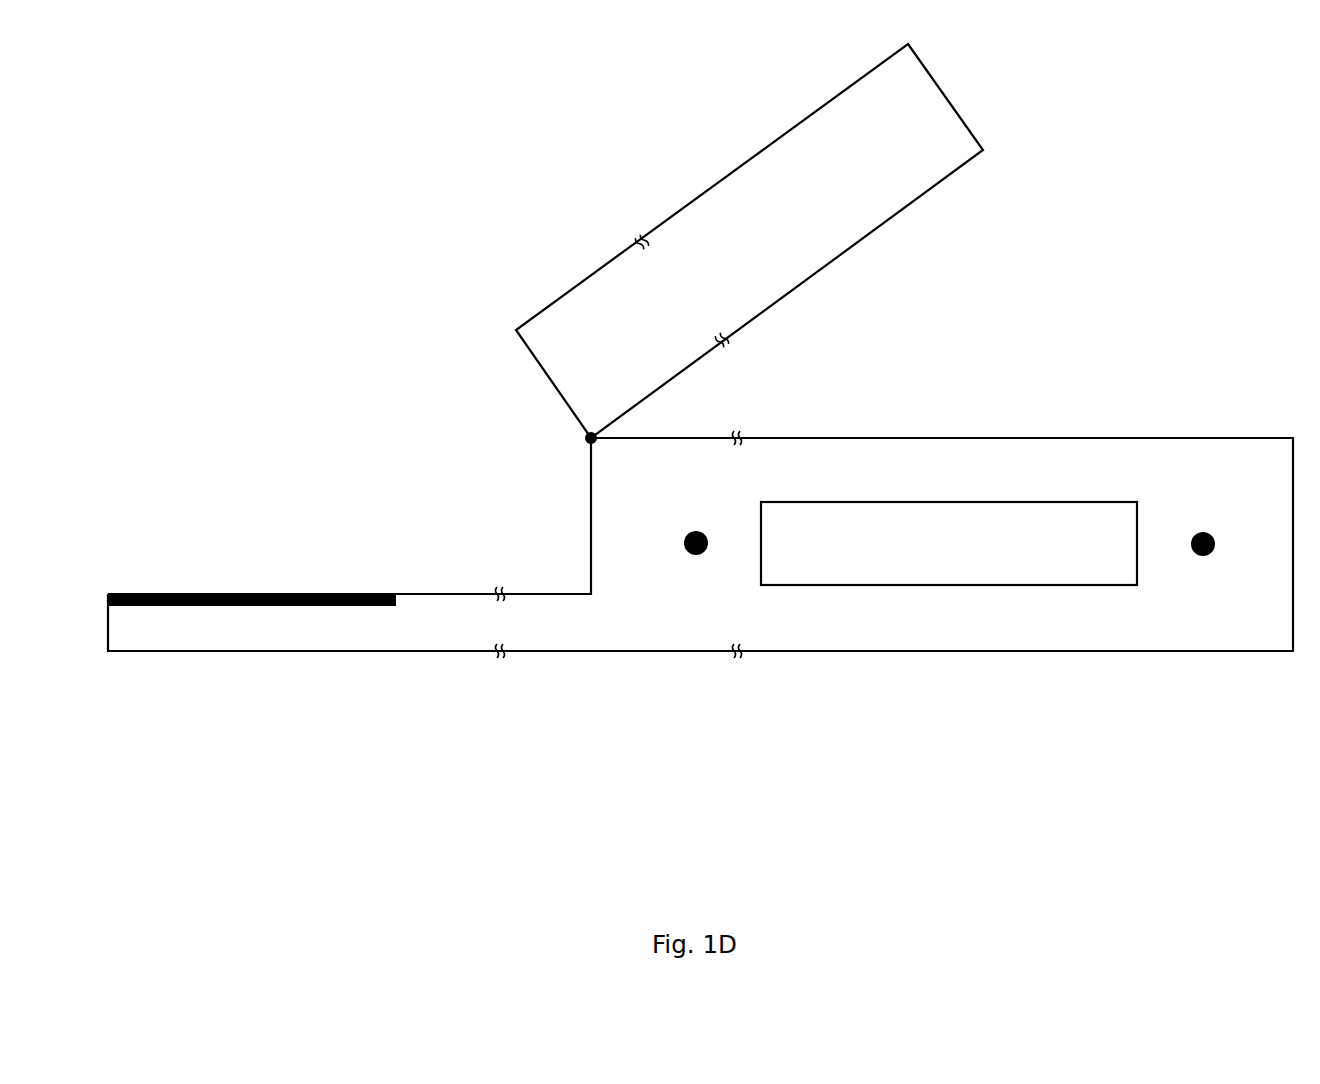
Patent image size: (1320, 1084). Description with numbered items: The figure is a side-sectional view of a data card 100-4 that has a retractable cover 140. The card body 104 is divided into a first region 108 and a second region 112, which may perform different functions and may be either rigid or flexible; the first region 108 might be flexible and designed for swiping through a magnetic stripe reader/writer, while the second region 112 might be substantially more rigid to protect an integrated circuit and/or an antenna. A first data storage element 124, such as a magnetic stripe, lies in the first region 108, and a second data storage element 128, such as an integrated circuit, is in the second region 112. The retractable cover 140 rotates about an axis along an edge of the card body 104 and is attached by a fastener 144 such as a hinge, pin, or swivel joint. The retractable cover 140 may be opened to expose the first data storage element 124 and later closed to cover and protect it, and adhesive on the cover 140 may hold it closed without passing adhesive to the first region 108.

The data card 100-4 is at (364, 188).
The card body 104 is at (578, 593).
The first region 108 is at (214, 654).
The second region 112 is at (1196, 534).
The first data storage element 124 is at (378, 607).
The second data storage element 128 is at (848, 545).
The retractable cover 140 is at (976, 137).
The fastener 144 is at (586, 438).